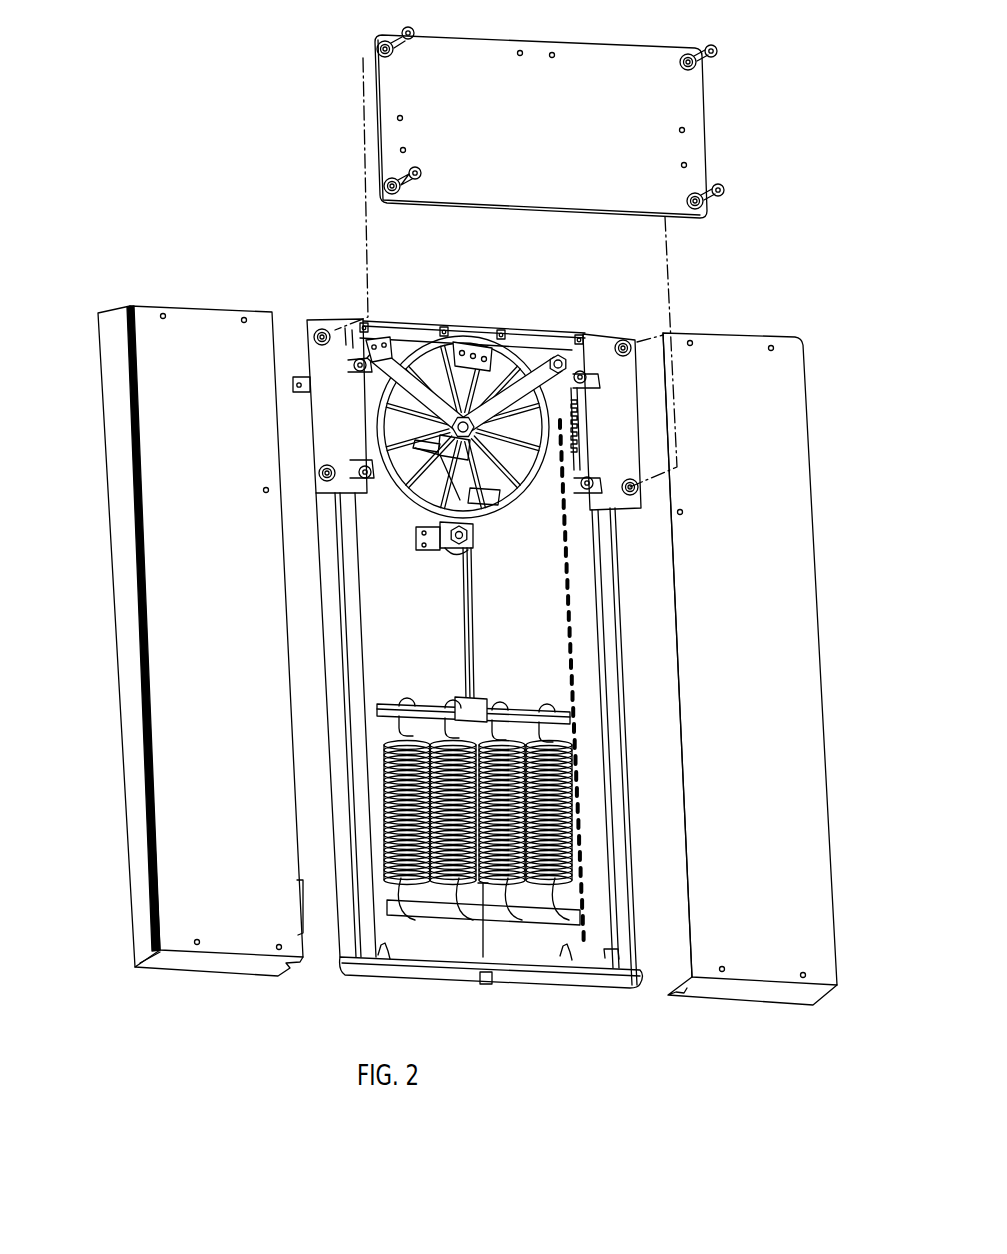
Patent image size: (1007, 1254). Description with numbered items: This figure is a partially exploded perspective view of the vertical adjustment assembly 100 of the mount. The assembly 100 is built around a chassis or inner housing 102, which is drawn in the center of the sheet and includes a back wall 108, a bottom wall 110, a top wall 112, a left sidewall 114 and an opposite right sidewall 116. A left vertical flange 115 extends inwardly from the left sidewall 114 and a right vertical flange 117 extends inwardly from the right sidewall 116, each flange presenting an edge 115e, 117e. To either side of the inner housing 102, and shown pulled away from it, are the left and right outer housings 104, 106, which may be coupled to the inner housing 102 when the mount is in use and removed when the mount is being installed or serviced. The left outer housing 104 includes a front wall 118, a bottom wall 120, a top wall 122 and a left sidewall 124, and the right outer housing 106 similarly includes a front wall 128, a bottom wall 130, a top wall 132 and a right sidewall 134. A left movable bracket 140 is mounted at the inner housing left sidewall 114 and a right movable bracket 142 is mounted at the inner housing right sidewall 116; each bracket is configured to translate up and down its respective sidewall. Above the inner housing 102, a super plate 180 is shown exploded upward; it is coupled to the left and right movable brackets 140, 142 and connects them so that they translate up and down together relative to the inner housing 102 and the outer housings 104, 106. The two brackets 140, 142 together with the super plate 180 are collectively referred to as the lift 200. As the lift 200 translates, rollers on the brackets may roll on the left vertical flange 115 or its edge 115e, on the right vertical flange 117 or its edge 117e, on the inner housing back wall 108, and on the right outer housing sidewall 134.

The vertical adjustment assembly 100 is at (207, 108).
The inner housing 102 is at (485, 649).
The left outer housing 104 is at (182, 643).
The right outer housing 106 is at (754, 675).
The back wall 108 is at (455, 940).
The bottom wall 110 is at (538, 975).
The top wall 112 is at (523, 324).
The left sidewall 114 is at (347, 930).
The left vertical flange 115 is at (374, 938).
The edge 115e is at (363, 638).
The right sidewall 116 is at (640, 928).
The right vertical flange 117 is at (645, 970).
The edge 117e is at (597, 626).
The front wall 118 is at (164, 766).
The bottom wall 120 is at (191, 958).
The top wall 122 is at (187, 305).
The left sidewall 124 is at (128, 612).
The front wall 128 is at (794, 715).
The bottom wall 130 is at (754, 995).
The top wall 132 is at (737, 336).
The right sidewall 134 is at (812, 487).
The left movable bracket 140 is at (332, 315).
The right movable bracket 142 is at (601, 328).
The super plate 180 is at (712, 128).
The lift 200 is at (712, 220).